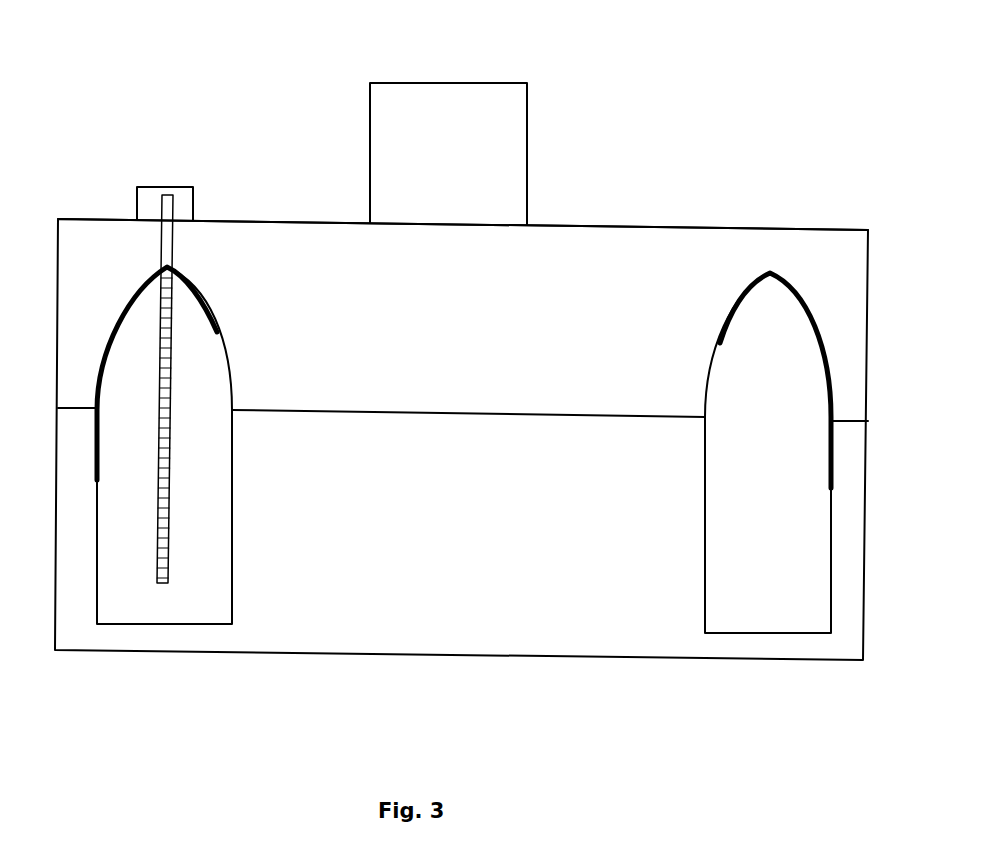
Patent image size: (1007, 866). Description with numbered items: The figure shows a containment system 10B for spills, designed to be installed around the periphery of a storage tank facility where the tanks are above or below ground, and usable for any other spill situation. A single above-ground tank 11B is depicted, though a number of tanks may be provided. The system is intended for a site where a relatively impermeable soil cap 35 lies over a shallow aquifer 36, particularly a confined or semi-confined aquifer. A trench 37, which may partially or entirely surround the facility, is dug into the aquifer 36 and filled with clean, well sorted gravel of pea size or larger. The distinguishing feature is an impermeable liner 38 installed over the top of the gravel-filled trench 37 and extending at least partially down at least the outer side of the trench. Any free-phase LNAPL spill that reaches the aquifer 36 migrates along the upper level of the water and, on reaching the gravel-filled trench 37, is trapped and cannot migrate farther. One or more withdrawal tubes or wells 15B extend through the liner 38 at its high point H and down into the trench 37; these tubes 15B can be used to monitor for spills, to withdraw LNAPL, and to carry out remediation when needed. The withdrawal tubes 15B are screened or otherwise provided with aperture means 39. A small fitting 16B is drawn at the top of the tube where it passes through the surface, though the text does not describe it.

The containment system 10B is at (461, 340).
The above-ground tank 11B is at (480, 125).
The withdrawal tube 15B is at (230, 349).
The mounting boss 16B is at (197, 207).
The impermeable soil cap 35 is at (463, 201).
The aquifer 36 is at (473, 542).
The trench 37 is at (464, 450).
The impermeable liner 38 is at (464, 371).
The aperture means 39 is at (233, 349).
The high point H is at (160, 268).